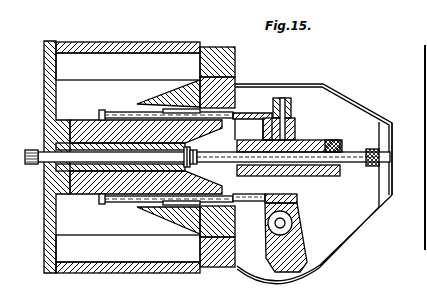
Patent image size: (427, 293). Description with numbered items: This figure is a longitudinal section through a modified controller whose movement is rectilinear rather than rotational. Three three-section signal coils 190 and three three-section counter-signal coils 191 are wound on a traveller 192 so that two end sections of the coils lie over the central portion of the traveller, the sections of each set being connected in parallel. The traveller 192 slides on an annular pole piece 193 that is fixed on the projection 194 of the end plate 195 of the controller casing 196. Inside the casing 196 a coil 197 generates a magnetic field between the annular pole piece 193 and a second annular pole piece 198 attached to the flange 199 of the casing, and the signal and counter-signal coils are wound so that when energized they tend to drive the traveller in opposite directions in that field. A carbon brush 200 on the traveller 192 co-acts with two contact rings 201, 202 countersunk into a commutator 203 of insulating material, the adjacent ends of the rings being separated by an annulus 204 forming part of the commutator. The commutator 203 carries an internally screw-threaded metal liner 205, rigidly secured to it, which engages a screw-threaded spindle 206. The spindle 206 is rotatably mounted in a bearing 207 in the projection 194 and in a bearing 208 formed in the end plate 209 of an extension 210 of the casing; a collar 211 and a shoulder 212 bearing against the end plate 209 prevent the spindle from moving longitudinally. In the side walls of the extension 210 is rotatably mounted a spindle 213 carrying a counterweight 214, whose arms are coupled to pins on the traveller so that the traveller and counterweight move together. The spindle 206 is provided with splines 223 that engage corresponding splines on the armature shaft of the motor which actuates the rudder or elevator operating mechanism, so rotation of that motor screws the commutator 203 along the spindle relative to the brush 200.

The signal coils 190 is at (252, 201).
The counter-signal coils 191 is at (110, 111).
The traveller 192 is at (99, 113).
The annular pole piece 193 is at (125, 119).
The projection 194 is at (99, 173).
The end plate 195 is at (55, 210).
The controller casing 196 is at (127, 42).
The coil 197 is at (128, 254).
The second annular pole piece 198 is at (236, 83).
The flange 199 is at (206, 62).
The carbon brush 200 is at (275, 110).
The contact ring 201 is at (315, 139).
The contact ring 202 is at (257, 140).
The commutator 203 is at (329, 177).
The annulus 204 is at (295, 128).
The metal liner 205 is at (341, 141).
The screw-threaded spindle 206 is at (221, 162).
The bearing 207 is at (72, 170).
The bearing 208 is at (391, 155).
The end plate 209 is at (390, 188).
The extension 210 is at (302, 235).
The collar 211 is at (191, 146).
The shoulder 212 is at (378, 170).
The spindle 213 is at (290, 219).
The counterweight 214 is at (296, 252).
The splines 223 is at (30, 150).